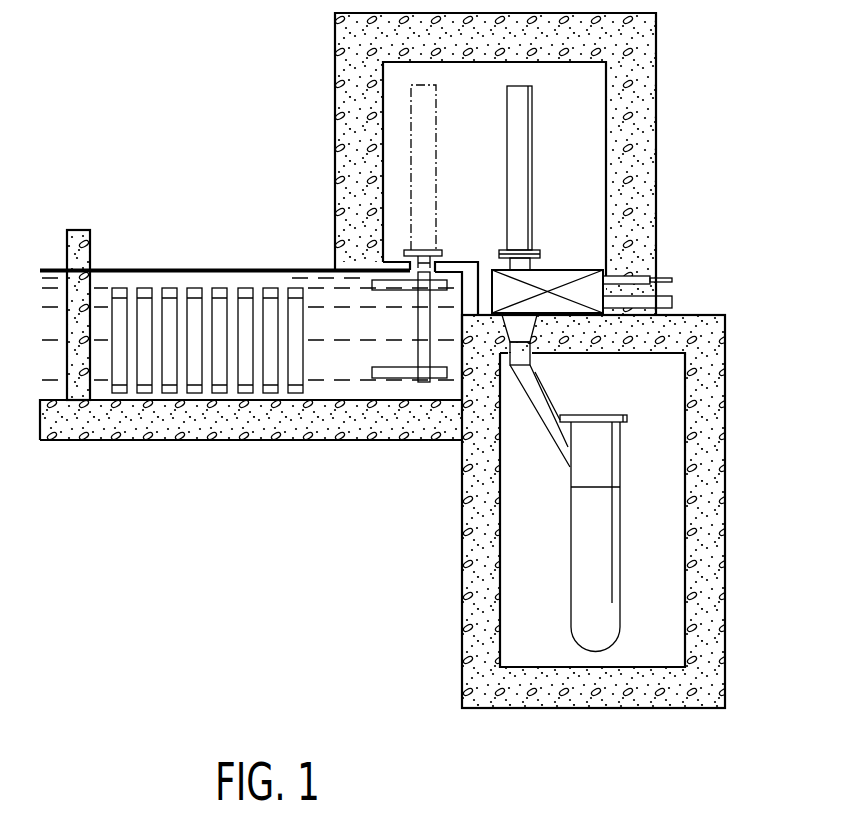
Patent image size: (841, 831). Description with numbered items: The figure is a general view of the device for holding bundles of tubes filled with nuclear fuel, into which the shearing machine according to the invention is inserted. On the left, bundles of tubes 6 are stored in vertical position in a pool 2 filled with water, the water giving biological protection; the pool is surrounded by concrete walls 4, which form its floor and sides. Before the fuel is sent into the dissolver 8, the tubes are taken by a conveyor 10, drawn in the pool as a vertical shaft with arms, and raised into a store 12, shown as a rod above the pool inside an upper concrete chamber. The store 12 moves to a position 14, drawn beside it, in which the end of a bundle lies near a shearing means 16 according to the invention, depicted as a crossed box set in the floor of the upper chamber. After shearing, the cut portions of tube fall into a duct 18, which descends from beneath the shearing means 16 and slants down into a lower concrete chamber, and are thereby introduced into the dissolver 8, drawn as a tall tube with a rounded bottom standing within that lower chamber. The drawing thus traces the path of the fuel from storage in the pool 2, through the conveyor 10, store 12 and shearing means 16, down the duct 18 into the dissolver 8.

The pool 2 is at (325, 295).
The concrete walls 4 is at (140, 420).
The bundles of tubes 6 is at (118, 305).
The dissolver 8 is at (592, 635).
The conveyor 10 is at (380, 373).
The store 12 is at (410, 93).
The position 14 is at (522, 152).
The shearing means 16 is at (557, 278).
The duct 18 is at (532, 387).